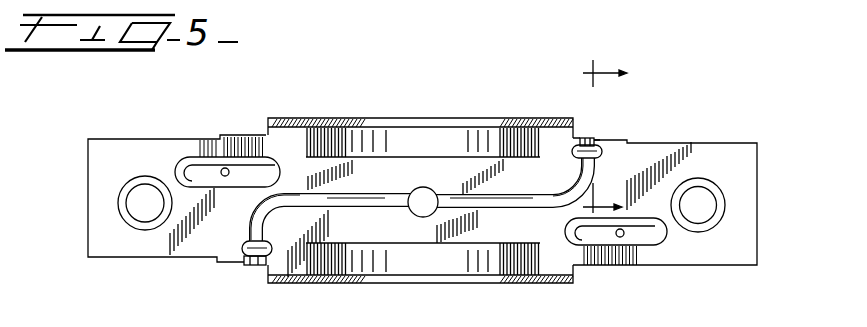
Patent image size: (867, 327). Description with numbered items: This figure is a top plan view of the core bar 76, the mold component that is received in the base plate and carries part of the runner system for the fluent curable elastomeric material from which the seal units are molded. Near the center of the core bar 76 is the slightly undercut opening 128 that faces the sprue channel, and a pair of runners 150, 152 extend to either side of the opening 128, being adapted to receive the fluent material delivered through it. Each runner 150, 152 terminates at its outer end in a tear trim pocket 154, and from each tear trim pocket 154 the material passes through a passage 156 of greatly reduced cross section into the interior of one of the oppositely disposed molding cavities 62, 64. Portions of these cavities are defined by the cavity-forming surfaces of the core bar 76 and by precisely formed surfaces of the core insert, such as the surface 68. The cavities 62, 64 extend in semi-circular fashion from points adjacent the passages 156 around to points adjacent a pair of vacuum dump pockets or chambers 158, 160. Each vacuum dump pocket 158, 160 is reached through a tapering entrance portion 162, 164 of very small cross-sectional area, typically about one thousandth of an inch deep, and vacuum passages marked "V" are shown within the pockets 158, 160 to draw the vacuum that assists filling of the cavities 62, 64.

The molding cavity 62 is at (390, 186).
The molding cavity 64 is at (596, 128).
The precisely formed surface 68 is at (741, 178).
The core bar 76 is at (429, 185).
The opening 128 is at (423, 200).
The runner 150 is at (355, 201).
The runner 152 is at (533, 201).
The tear trim pocket 154 is at (247, 258).
The passage 156 is at (253, 266).
The vacuum dump pocket 158 is at (197, 166).
The vacuum dump pocket 160 is at (621, 237).
The tapering entrance portion 162 is at (258, 137).
The tapering entrance portion 164 is at (585, 266).